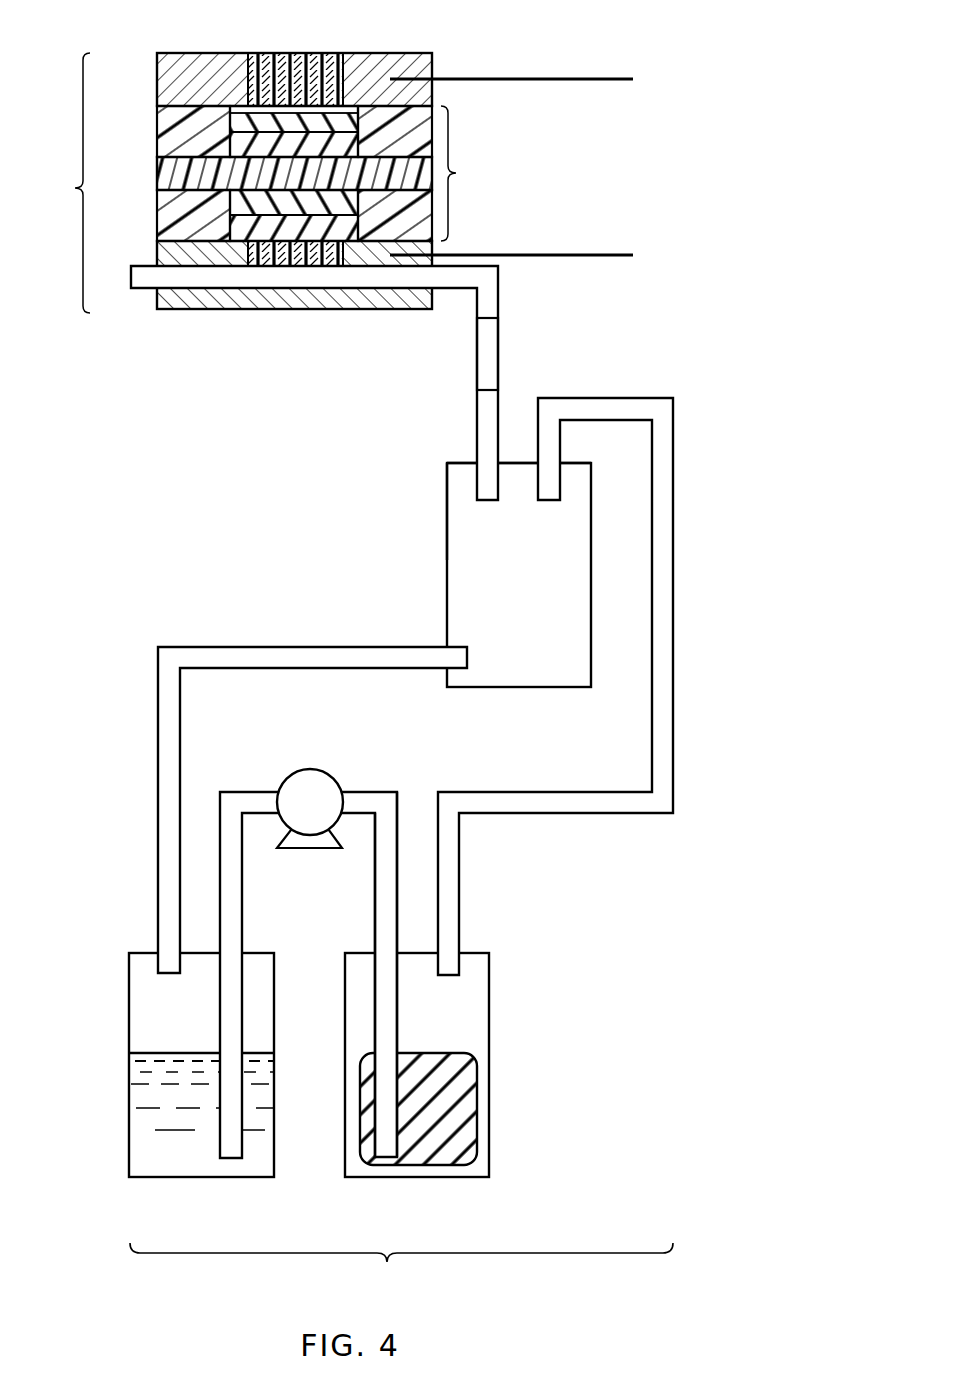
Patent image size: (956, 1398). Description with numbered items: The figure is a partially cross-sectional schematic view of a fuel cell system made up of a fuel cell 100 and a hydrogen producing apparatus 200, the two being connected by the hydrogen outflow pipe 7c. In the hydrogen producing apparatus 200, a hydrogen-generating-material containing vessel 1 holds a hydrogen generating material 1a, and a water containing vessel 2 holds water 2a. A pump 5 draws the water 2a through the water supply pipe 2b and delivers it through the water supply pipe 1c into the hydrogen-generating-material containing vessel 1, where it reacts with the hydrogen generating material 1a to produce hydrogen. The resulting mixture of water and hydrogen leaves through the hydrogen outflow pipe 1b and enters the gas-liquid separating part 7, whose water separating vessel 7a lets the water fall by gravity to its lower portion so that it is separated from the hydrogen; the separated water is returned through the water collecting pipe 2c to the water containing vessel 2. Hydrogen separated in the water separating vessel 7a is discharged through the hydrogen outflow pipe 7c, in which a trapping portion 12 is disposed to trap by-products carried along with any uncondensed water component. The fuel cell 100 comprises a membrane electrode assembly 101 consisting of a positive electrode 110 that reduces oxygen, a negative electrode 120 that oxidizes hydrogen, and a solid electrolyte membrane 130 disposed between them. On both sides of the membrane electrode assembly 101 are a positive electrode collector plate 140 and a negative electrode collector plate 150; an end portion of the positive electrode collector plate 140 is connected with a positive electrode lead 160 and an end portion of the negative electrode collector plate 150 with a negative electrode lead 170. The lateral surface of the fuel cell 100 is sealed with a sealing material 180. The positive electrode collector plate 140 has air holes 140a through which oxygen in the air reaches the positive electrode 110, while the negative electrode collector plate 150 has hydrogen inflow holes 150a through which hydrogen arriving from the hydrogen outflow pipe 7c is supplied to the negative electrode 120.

The fuel cell 100 is at (329, 184).
The positive electrode collector plate 140 is at (294, 53).
The air holes 140a is at (328, 50).
The sealing material 180 is at (158, 113).
The positive electrode 110 is at (225, 145).
The solid electrolyte membrane 130 is at (162, 171).
The negative electrode 120 is at (225, 204).
The negative electrode collector plate 150 is at (294, 304).
The hydrogen inflow holes 150a is at (325, 250).
The membrane electrode assembly 101 is at (473, 173).
The positive electrode lead 160 is at (513, 78).
The negative electrode lead 170 is at (560, 254).
The trapping portion 12 is at (495, 344).
The hydrogen outflow pipe 7c is at (341, 383).
The water separating vessel 7a is at (458, 527).
The gas-liquid separating part 7 is at (447, 588).
The pump 5 is at (305, 787).
The water collecting pipe 2c is at (158, 845).
The water supply pipe 2b is at (308, 975).
The water supply pipe 1c is at (375, 899).
The hydrogen outflow pipe 1b is at (450, 900).
The water containing vessel 2 is at (129, 1003).
The water 2a is at (141, 1118).
The hydrogen-generating-material containing vessel 1 is at (418, 1179).
The hydrogen generating material 1a is at (463, 1103).
The hydrogen producing apparatus 200 is at (401, 1270).